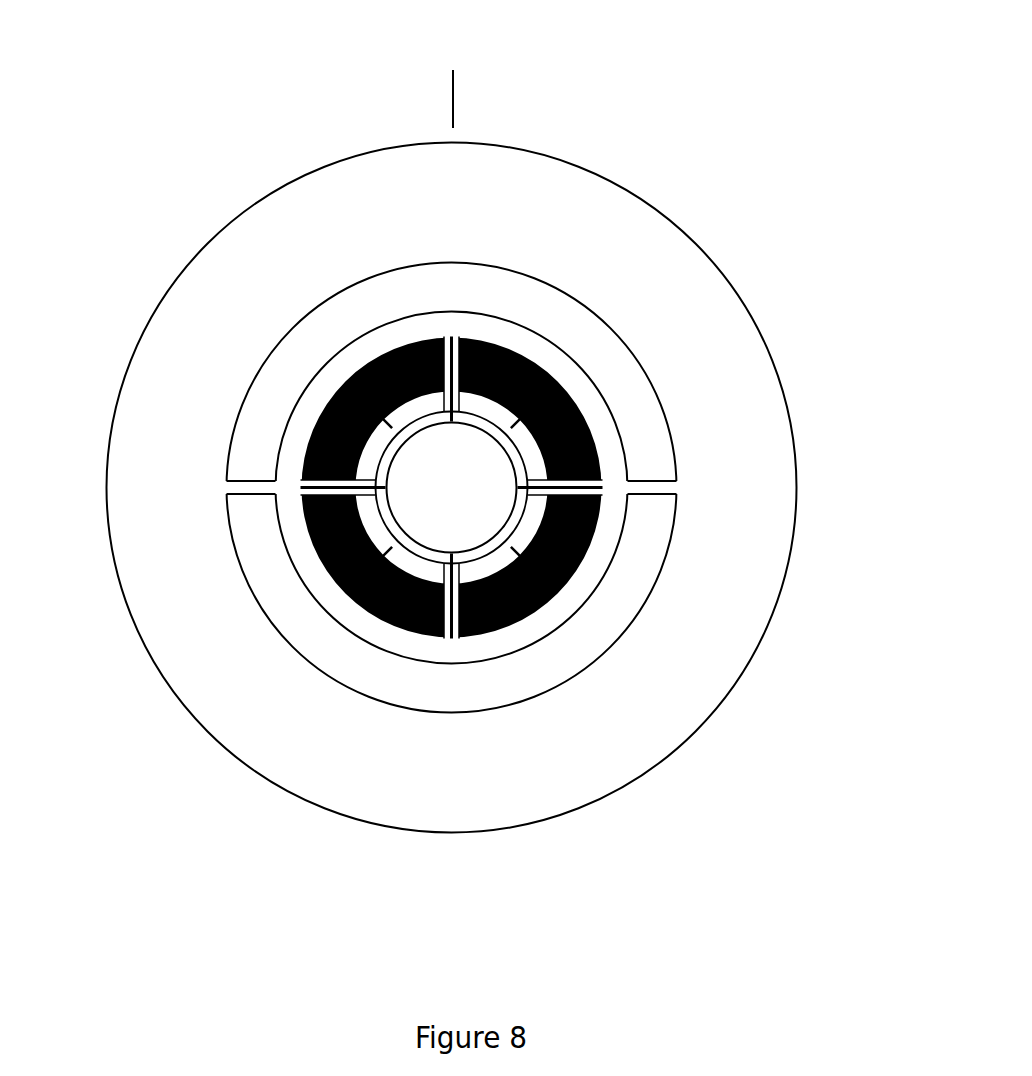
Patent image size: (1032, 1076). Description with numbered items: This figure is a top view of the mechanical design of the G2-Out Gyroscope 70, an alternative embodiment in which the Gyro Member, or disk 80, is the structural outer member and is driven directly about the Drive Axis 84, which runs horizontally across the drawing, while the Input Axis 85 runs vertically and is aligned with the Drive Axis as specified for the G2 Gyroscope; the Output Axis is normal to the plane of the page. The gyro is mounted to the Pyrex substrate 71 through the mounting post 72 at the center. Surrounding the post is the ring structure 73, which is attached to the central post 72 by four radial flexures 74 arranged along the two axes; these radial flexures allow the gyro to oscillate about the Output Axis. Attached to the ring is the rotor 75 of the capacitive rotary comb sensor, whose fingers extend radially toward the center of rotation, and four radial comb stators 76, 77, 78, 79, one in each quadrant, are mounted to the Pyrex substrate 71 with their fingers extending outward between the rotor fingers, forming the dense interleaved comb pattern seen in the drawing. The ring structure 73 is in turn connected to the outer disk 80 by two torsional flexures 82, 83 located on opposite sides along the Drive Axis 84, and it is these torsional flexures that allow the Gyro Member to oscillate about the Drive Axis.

The G2-Out Gyroscope 70 is at (740, 232).
The Pyrex substrate 71 is at (846, 306).
The mounting post 72 is at (452, 488).
The ring structure 73 is at (605, 540).
The radial flexures 74 is at (447, 637).
The rotor 75 is at (303, 540).
The radial comb stator 76 is at (560, 387).
The radial comb stator 77 is at (548, 600).
The radial comb stator 78 is at (348, 590).
The radial comb stator 79 is at (353, 378).
The Gyro Member (disk) 80 is at (452, 465).
The torsional flexure 82 is at (248, 480).
The torsional flexure 83 is at (655, 475).
The Drive Axis 84 is at (875, 506).
The Input Axis 85 is at (509, 81).